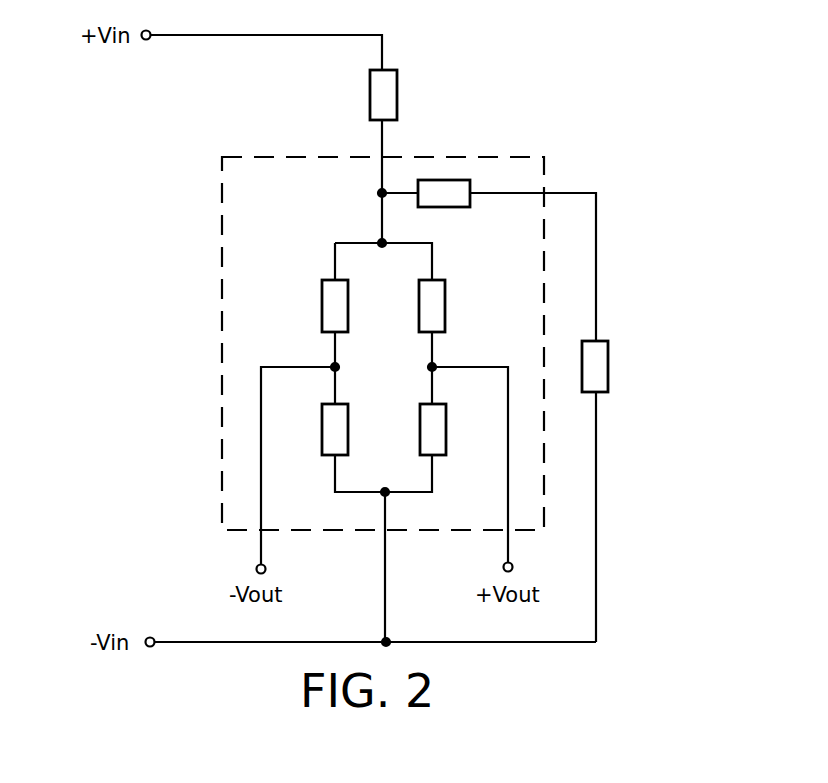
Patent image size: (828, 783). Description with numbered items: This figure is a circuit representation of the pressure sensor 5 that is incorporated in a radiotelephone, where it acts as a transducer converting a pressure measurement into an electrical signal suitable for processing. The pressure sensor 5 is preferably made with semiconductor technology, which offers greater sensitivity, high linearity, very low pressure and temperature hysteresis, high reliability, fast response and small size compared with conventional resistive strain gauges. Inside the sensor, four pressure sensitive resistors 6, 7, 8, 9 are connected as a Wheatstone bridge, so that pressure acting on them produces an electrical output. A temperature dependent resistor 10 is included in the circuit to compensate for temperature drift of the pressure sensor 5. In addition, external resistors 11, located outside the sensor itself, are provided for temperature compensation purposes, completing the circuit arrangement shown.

The pressure sensor 5 is at (556, 106).
The pressure sensitive resistor 6 is at (349, 292).
The pressure sensitive resistor 7 is at (418, 318).
The pressure sensitive resistor 8 is at (420, 440).
The pressure sensitive resistor 9 is at (349, 417).
The temperature dependent resistor 10 is at (447, 180).
The external resistors 11 is at (369, 95).